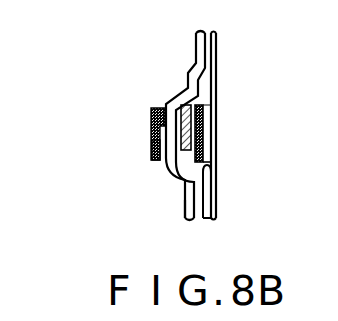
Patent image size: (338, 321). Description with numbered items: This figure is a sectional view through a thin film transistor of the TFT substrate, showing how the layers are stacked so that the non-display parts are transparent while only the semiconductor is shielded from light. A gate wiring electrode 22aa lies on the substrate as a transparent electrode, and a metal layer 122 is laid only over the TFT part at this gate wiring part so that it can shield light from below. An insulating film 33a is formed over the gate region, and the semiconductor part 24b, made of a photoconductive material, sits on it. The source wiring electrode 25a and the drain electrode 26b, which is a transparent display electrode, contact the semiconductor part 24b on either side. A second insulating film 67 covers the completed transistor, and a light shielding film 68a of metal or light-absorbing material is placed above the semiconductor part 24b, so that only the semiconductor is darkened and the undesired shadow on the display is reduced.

The source wiring electrode 25a is at (200, 82).
The metal layer 122 is at (204, 122).
The gate wiring electrode 22aa is at (206, 156).
The insulating film 33a is at (211, 190).
The drain electrode 26b is at (200, 211).
The semiconductor part 24b is at (151, 128).
The light shielding film 68a is at (152, 158).
The second insulating film 67 is at (187, 208).